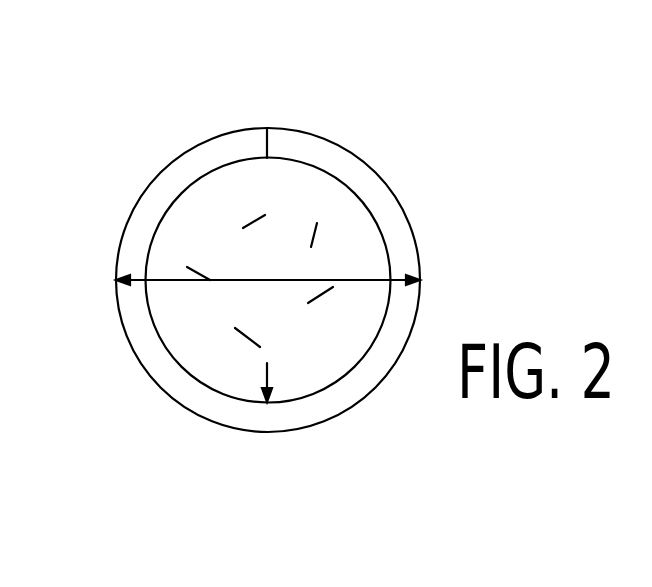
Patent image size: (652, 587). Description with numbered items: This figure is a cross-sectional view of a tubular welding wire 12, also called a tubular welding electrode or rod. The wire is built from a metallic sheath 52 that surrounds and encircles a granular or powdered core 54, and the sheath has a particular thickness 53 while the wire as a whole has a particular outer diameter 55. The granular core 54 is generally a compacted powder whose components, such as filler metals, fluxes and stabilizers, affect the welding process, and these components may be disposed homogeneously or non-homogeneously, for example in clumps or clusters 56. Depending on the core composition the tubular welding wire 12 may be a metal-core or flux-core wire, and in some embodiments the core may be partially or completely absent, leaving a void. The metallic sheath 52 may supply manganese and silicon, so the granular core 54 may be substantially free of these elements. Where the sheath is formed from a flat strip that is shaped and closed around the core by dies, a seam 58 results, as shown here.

The tubular welding wire 12 is at (320, 114).
The metallic sheath 52 is at (372, 187).
The thickness 53 is at (267, 448).
The granular core 54 is at (210, 234).
The outer diameter 55 is at (350, 282).
The clumps or clusters 56 is at (242, 349).
The seam 58 is at (265, 147).